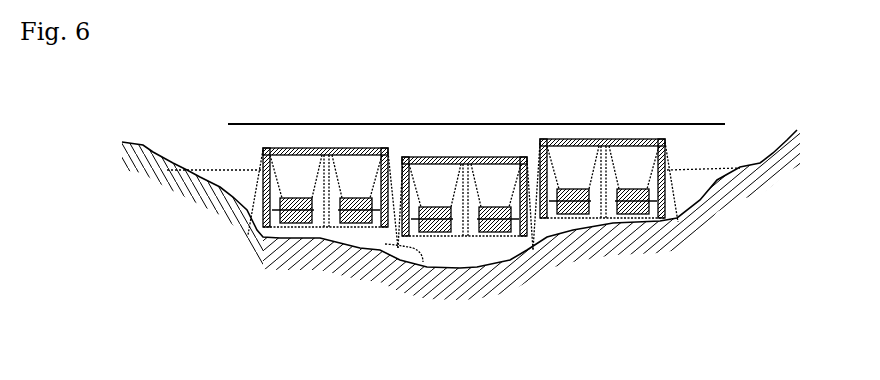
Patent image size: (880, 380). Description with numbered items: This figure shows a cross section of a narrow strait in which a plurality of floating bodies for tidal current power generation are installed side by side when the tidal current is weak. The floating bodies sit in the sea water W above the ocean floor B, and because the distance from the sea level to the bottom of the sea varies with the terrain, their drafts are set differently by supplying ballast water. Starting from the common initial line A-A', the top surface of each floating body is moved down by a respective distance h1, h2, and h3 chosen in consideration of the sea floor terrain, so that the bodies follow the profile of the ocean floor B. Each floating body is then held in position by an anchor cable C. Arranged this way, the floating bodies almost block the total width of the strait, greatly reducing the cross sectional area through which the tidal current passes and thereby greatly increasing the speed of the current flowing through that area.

The initial line A is at (344, 126).
The initial line A' is at (610, 126).
The downward displacement of first floating body h1 is at (326, 148).
The downward displacement of second floating body h2 is at (464, 157).
The downward displacement of third floating body h3 is at (602, 139).
The sea water W is at (453, 215).
The ocean floor B is at (461, 215).
The anchor cable C is at (423, 262).